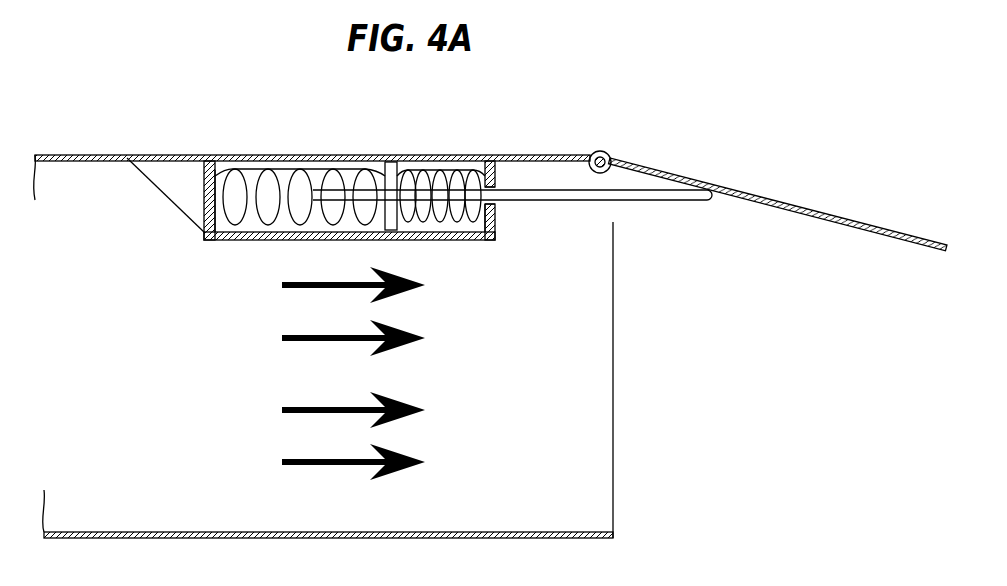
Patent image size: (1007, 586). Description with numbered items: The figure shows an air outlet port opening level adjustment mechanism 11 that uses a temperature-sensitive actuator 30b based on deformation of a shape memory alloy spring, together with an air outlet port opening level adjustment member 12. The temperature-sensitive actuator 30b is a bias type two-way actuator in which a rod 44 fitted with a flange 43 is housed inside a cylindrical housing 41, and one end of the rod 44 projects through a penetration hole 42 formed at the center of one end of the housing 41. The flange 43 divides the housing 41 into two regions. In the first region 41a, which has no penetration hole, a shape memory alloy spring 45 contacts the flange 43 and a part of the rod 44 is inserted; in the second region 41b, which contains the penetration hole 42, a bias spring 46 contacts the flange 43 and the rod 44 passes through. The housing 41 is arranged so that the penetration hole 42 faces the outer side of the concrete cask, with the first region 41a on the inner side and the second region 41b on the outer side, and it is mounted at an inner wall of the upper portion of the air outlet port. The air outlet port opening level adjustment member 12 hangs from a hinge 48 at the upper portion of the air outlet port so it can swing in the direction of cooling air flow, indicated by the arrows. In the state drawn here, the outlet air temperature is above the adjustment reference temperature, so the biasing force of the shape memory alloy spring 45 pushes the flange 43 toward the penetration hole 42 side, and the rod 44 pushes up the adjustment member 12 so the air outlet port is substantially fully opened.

The air outlet port opening level adjustment mechanism 11 is at (112, 303).
The air outlet port opening level adjustment member 12 is at (828, 217).
The temperature-sensitive actuator 30b is at (232, 278).
The housing 41 is at (208, 198).
The first region 41a is at (268, 240).
The second region 41b is at (460, 230).
The penetration hole 42 is at (495, 204).
The flange 43 is at (393, 232).
The rod 44 is at (661, 199).
The shape memory alloy spring 45 is at (230, 240).
The bias spring 46 is at (480, 237).
The hinge 48 is at (608, 152).